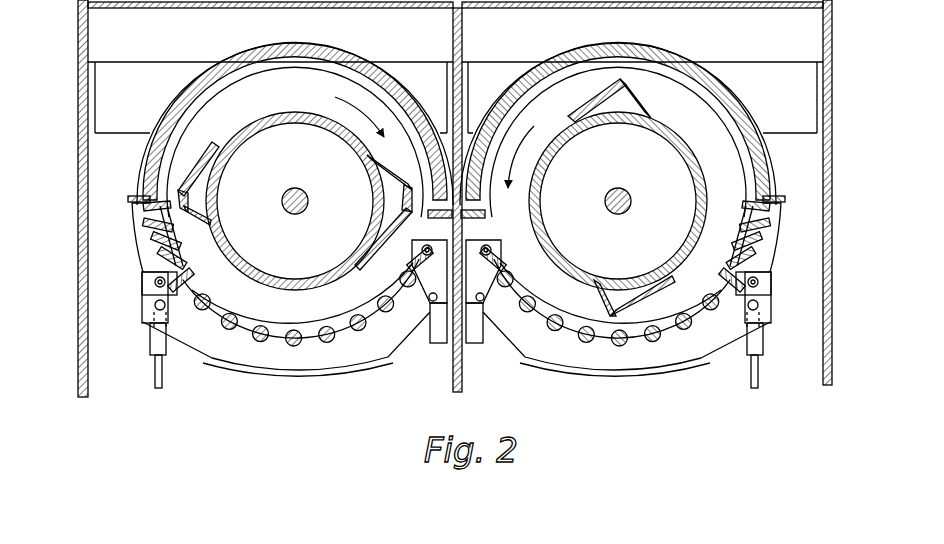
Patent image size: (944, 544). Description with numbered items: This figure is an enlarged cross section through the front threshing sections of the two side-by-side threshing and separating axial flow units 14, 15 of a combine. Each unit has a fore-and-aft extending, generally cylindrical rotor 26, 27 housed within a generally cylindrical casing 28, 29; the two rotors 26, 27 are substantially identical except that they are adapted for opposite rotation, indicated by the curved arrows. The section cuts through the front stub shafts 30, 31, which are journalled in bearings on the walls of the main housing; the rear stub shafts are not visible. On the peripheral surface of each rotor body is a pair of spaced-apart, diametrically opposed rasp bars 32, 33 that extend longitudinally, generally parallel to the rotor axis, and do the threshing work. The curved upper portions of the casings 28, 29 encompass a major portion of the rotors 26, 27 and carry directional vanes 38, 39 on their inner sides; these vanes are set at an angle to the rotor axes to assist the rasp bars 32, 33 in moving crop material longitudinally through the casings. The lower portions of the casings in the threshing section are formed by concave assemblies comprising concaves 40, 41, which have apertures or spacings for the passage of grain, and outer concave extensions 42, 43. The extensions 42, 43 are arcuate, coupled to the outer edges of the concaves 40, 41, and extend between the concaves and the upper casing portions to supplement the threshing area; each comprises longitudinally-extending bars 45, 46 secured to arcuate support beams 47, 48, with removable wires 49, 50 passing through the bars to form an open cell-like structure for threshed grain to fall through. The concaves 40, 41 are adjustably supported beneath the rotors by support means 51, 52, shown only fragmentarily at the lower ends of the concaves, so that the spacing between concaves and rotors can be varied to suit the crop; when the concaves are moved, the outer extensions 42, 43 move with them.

The threshing and separating axial flow unit 14 is at (115, 152).
The threshing and separating axial flow unit 15 is at (800, 158).
The rotor 26 is at (295, 193).
The rotor 27 is at (607, 201).
The casing 28 is at (246, 45).
The casing 29 is at (664, 46).
The front stub shaft 30 is at (309, 202).
The front stub shaft 31 is at (632, 201).
The rasp bar 32 is at (208, 170).
The rasp bar 33 is at (612, 88).
The directional vane 38 is at (238, 84).
The directional vane 39 is at (726, 122).
The concave 40 is at (278, 397).
The concave 41 is at (653, 397).
The outer concave extension 42 is at (115, 258).
The outer concave extension 43 is at (798, 236).
The longitudinally-extending bar 45 is at (758, 270).
The longitudinally-extending bar 46 is at (142, 270).
The arcuate support beam 47 is at (760, 247).
The arcuate support beam 48 is at (132, 213).
The removable wire 49 is at (786, 205).
The removable wire 50 is at (150, 237).
The concave adjustable support means 51 is at (483, 348).
The concave adjustable support means 52 is at (150, 340).